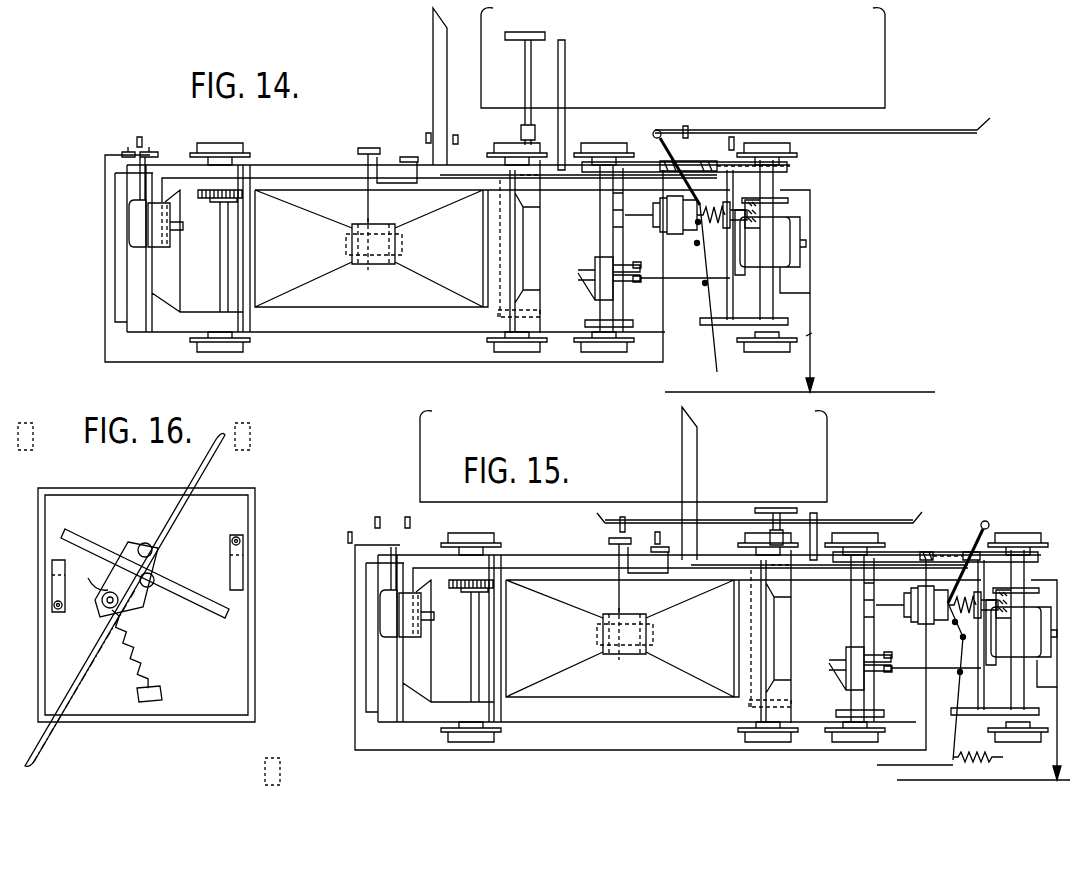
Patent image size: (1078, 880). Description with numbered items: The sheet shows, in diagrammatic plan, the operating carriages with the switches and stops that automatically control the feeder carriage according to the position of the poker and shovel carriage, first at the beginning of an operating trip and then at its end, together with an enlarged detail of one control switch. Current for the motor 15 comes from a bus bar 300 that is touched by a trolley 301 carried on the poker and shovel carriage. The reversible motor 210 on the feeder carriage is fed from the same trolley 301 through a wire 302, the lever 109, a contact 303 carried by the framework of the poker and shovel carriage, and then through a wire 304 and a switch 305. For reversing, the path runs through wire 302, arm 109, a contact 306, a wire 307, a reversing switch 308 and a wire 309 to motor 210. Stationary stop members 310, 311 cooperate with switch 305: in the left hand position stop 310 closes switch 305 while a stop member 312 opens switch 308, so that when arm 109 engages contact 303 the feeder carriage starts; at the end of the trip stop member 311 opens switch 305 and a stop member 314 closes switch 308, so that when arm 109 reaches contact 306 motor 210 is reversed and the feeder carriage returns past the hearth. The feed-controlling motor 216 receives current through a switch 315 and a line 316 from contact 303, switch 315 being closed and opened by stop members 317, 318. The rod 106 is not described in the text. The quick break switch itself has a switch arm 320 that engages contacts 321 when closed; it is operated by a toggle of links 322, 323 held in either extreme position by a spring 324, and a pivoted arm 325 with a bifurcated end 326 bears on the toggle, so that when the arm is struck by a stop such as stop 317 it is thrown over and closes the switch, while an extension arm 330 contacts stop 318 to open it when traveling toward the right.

In FIG. 14, the motor 15 is at (778, 243).
In FIG. 15, the motor 15 is at (1017, 620).
In FIG. 14, the operating rod 106 is at (919, 130).
In FIG. 15, the operating rod 106 is at (845, 519).
In FIG. 14, the lever 109 is at (656, 129).
In FIG. 15, the lever 109 is at (984, 522).
In FIG. 14, the reversible motor 210 is at (150, 228).
In FIG. 15, the reversible motor 210 is at (397, 620).
In FIG. 14, the motor 216 is at (400, 244).
In FIG. 15, the motor 216 is at (652, 640).
In FIG. 14, the bus bar 300 is at (814, 390).
In FIG. 15, the bus bar 300 is at (897, 780).
In FIG. 14, the trolley 301 is at (810, 338).
In FIG. 15, the trolley 301 is at (1057, 742).
In FIG. 14, the wire 302 is at (810, 212).
In FIG. 15, the wire 302 is at (1055, 596).
In FIG. 14, the contact 303 is at (657, 160).
In FIG. 15, the contact 303 is at (926, 555).
In FIG. 14, the wire 304 is at (347, 364).
In FIG. 15, the wire 304 is at (586, 758).
In FIG. 14, the switch 305 is at (128, 150).
In FIG. 14, the contact 306 is at (792, 166).
In FIG. 15, the contact 306 is at (967, 553).
In FIG. 14, the wire 307 is at (465, 178).
In FIG. 15, the wire 307 is at (705, 568).
In FIG. 14, the reversing switch 308 is at (370, 202).
In FIG. 15, the reversing switch 308 is at (620, 592).
In FIG. 14, the wire 309 is at (295, 178).
In FIG. 15, the wire 309 is at (518, 570).
In FIG. 14, the stationary stop member 310 is at (138, 137).
In FIG. 16, the stationary stop member 310 is at (25, 450).
In FIG. 14, the stationary stop member 311 is at (456, 135).
In FIG. 15, the stationary stop member 311 is at (407, 516).
In FIG. 14, the stop member 312 is at (405, 155).
In FIG. 15, the stop member 312 is at (349, 531).
In FIG. 14, the stop member 314 is at (733, 137).
In FIG. 15, the stop member 314 is at (658, 532).
In FIG. 14, the switch 315 is at (368, 148).
In FIG. 15, the switch 315 is at (605, 538).
In FIG. 14, the line 316 is at (567, 190).
In FIG. 15, the line 316 is at (827, 578).
In FIG. 14, the stop member 317 is at (428, 133).
In FIG. 15, the stop member 317 is at (376, 516).
In FIG. 16, the stop member 317 is at (250, 450).
In FIG. 14, the stop member 318 is at (686, 126).
In FIG. 15, the stop member 318 is at (621, 517).
In FIG. 16, the stop member 318 is at (268, 758).
In FIG. 16, the switch arm 320 is at (165, 583).
In FIG. 16, the contacts 321 is at (60, 600).
In FIG. 16, the link 322 is at (127, 597).
In FIG. 16, the link 323 is at (143, 653).
In FIG. 16, the spring 324 is at (160, 677).
In FIG. 16, the pivoted arm 325 is at (187, 484).
In FIG. 16, the bifurcated end 326 is at (88, 580).
In FIG. 16, the extension arm 330 is at (80, 677).